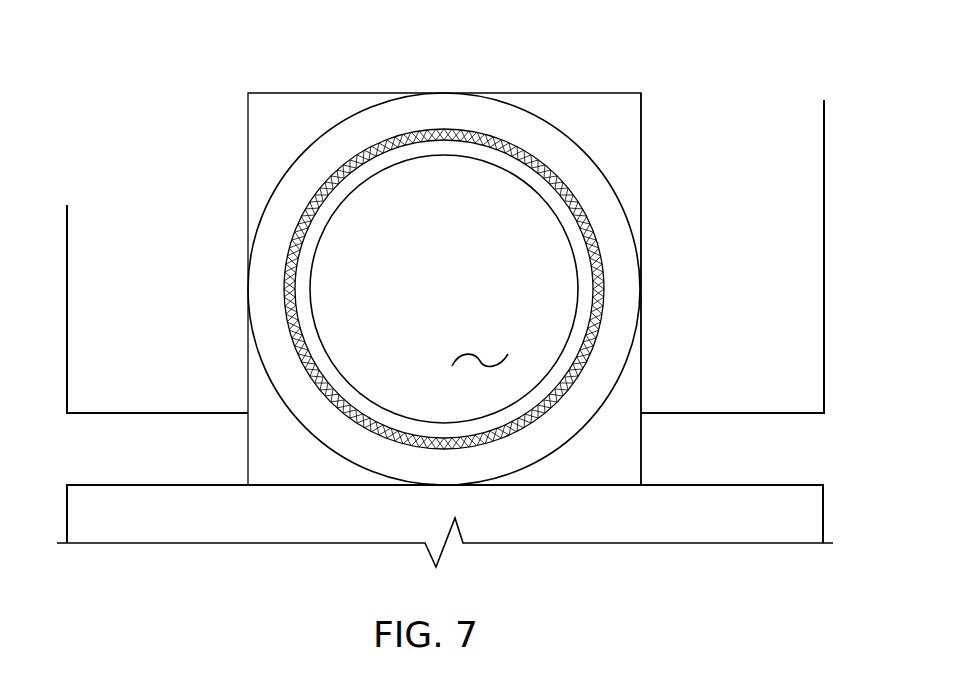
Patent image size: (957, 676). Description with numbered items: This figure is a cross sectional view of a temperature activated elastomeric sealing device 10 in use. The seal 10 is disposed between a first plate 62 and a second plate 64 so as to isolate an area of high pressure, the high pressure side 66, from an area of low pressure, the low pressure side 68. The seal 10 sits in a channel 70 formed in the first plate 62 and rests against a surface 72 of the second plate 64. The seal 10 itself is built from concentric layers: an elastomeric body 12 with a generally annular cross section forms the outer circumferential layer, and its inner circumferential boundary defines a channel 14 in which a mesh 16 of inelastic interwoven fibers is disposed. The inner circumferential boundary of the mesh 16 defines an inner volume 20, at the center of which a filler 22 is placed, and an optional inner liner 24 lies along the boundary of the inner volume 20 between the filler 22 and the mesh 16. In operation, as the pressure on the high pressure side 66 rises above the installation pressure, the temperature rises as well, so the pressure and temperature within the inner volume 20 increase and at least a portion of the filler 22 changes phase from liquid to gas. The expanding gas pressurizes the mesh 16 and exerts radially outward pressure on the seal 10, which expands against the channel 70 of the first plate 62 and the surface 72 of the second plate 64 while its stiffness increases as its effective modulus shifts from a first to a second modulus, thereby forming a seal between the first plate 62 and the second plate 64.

The temperature activated elastomeric sealing device 10 is at (288, 122).
The elastomeric body 12 is at (555, 122).
The channel 14 is at (562, 170).
The mesh 16 is at (617, 283).
The inner volume 20 is at (548, 355).
The filler 22 is at (477, 370).
The inner liner 24 is at (367, 175).
The first plate 62 is at (824, 170).
The second plate 64 is at (826, 512).
The high pressure side 66 is at (54, 353).
The low pressure side 68 is at (868, 255).
The channel 70 is at (641, 370).
The surface 72 is at (174, 485).